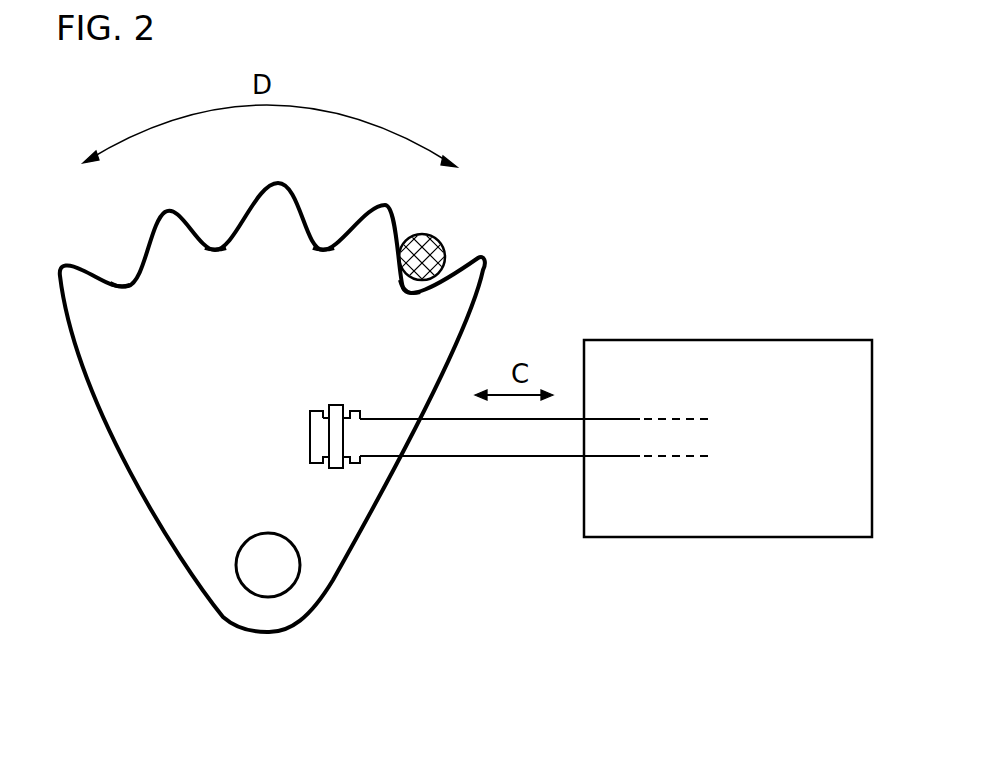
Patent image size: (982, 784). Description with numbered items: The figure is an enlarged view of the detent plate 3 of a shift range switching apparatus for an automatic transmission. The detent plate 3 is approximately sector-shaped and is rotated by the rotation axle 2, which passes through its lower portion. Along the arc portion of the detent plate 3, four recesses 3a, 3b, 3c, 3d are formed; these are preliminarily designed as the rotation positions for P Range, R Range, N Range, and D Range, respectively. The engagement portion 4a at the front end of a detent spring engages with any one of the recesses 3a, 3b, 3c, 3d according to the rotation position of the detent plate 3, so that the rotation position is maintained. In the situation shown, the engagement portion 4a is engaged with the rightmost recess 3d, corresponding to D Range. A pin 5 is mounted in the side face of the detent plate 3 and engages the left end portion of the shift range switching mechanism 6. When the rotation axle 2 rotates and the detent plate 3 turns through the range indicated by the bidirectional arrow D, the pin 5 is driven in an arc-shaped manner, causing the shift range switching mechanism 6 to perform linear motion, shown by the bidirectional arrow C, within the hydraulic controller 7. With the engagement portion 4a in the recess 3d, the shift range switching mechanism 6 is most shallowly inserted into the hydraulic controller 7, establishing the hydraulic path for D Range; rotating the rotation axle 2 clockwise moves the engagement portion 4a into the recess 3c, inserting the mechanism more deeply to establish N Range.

The rotation axle 2 is at (253, 575).
The detent plate 3 is at (177, 500).
The recess 3a is at (133, 288).
The recess 3b is at (215, 252).
The recess 3c is at (322, 252).
The recess 3d is at (402, 291).
The engagement portion 4a is at (440, 235).
The pin 5 is at (340, 470).
The shift range switching mechanism 6 is at (453, 452).
The hydraulic controller 7 is at (667, 529).